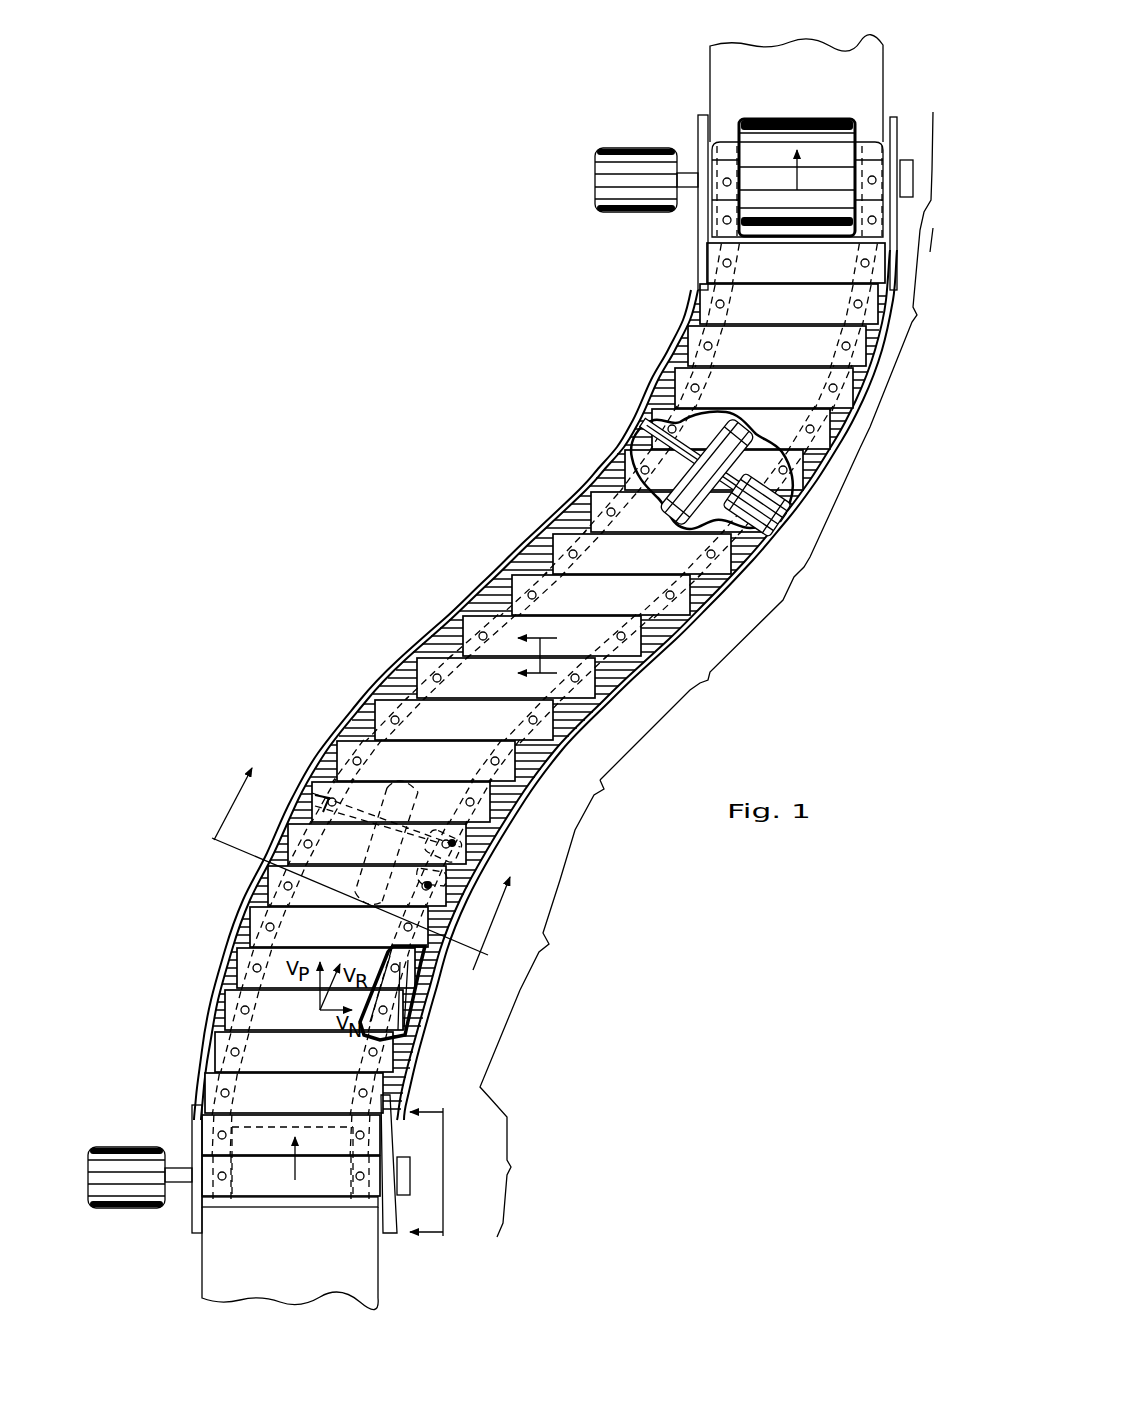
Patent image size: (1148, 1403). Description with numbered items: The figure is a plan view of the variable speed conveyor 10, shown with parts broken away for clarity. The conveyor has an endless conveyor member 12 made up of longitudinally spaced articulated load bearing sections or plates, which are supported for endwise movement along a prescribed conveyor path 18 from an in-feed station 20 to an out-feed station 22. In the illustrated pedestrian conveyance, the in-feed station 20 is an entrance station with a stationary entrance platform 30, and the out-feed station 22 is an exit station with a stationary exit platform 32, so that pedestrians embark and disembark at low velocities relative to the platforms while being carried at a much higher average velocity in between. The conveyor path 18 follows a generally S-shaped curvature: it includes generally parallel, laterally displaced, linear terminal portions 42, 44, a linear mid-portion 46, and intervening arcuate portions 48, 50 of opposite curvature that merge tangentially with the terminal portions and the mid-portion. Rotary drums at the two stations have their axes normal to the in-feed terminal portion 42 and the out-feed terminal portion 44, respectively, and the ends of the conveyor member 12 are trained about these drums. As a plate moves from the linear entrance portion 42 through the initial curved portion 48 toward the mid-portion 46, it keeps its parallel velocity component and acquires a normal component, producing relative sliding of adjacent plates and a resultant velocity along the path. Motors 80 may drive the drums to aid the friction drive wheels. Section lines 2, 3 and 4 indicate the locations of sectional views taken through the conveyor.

The variable speed conveyor 10 is at (466, 541).
The endless conveyor member 12 is at (600, 556).
The conveyor path 18 is at (470, 713).
The in-feed station 20 is at (193, 1245).
The out-feed station 22 is at (548, 183).
The stationary entrance platform 30 is at (368, 1277).
The stationary exit platform 32 is at (720, 80).
The in-feed terminal portion 42 is at (514, 1113).
The out-feed terminal portion 44 is at (903, 280).
The linear mid-portion 46 is at (730, 614).
The initial arcuate portion 48 is at (562, 885).
The second arcuate portion 50 is at (766, 474).
The motor 80 is at (618, 147).
The section line 2- 2 is at (437, 1172).
The section line 3- 3 is at (357, 881).
The section line 4- 4 is at (545, 658).